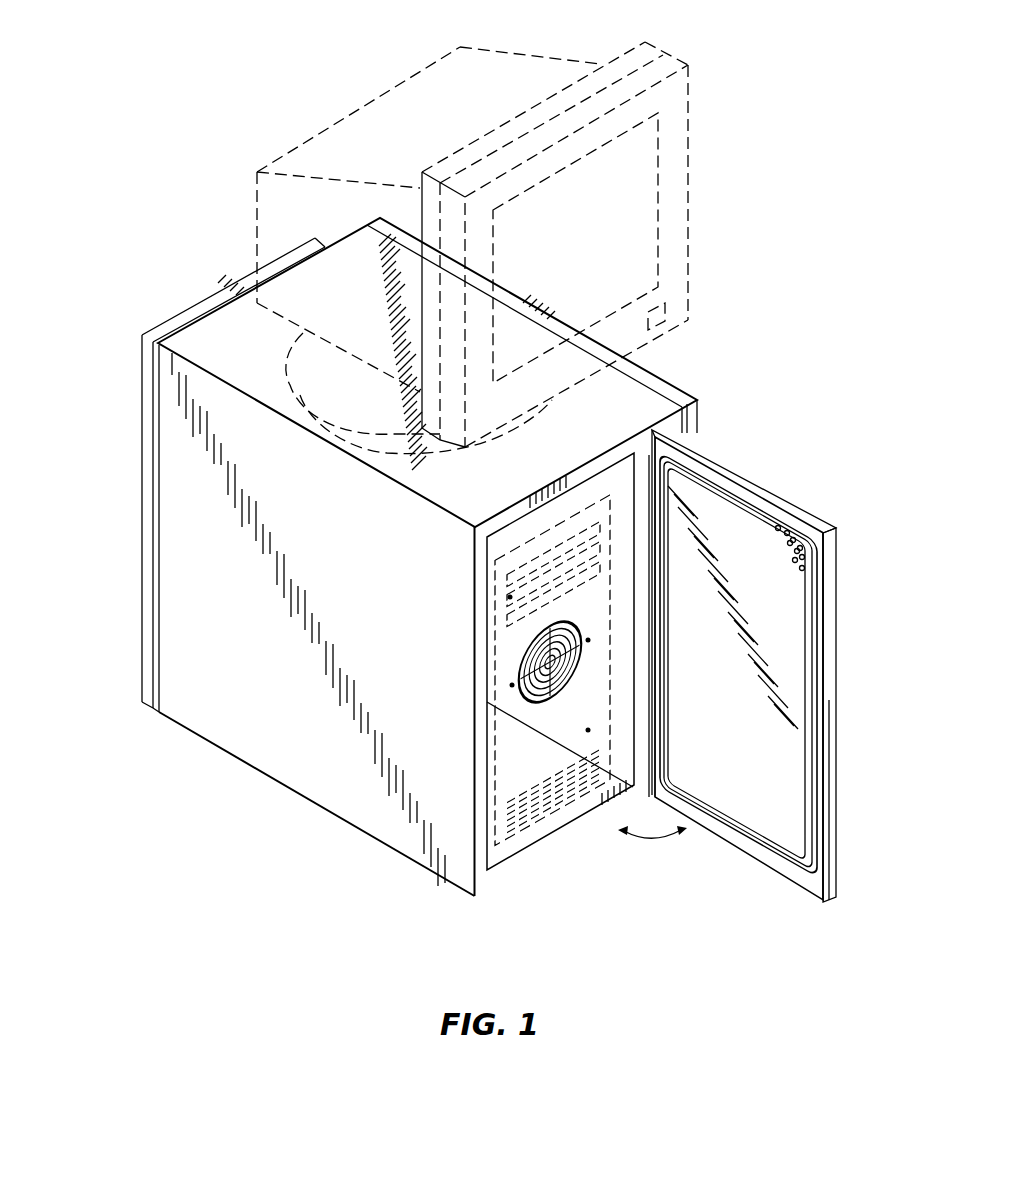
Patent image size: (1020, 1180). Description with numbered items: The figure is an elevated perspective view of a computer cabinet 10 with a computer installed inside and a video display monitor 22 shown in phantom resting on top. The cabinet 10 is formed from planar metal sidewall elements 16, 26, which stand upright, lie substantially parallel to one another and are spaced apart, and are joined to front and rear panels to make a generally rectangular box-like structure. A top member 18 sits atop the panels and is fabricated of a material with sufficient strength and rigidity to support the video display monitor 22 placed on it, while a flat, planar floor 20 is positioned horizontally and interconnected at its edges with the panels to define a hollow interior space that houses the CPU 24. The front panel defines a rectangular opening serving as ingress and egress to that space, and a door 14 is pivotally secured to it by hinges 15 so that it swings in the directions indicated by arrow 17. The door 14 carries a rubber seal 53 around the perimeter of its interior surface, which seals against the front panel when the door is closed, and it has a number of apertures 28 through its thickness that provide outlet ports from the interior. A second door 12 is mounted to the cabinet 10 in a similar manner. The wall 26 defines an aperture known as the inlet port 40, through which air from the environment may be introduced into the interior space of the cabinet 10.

The computer cabinet 10 is at (307, 772).
The door 12 is at (150, 505).
The door 14 is at (837, 618).
The hinges 15 is at (837, 710).
The sidewall panel 16 is at (345, 596).
The arrow 17 is at (651, 838).
The top member 18 is at (620, 428).
The floor 20 is at (558, 815).
The video display monitor 22 is at (690, 188).
The CPU 24 is at (597, 667).
The sidewall panel 26 is at (665, 378).
The apertures 28 is at (793, 538).
The inlet port 40 is at (583, 628).
The rubber seal 53 is at (837, 793).